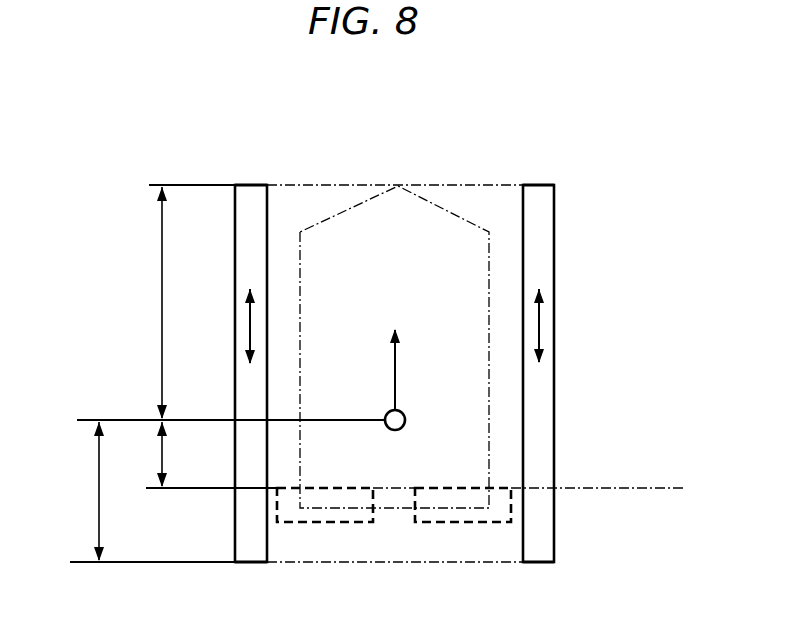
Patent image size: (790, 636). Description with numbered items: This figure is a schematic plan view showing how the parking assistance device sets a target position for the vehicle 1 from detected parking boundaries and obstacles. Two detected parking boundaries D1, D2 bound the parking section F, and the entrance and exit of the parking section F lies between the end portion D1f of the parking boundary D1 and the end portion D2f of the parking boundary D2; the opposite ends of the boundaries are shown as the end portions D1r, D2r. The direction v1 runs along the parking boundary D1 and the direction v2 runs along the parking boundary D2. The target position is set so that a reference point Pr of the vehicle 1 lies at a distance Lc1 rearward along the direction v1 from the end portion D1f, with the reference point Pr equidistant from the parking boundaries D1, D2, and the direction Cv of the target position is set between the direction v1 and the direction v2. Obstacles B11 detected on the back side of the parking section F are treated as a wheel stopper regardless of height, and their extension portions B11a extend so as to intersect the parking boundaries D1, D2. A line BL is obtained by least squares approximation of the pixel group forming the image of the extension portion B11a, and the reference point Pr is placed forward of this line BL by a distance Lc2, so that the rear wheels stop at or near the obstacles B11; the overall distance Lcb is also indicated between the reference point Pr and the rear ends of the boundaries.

The vehicle 1 is at (408, 185).
The parking boundary D1 is at (272, 221).
The end portion of the parking boundary D1 D1f is at (254, 183).
The rear end of first die D1r is at (251, 564).
The parking boundary D2 is at (519, 222).
The end portion of the parking boundary D2 D2f is at (543, 183).
The rear end of second die D2r is at (539, 564).
The parking section F is at (315, 204).
The distance Lc1 is at (139, 302).
The distance Lc2 is at (139, 454).
The length to bottom Lcb is at (78, 491).
The direction v1 is at (248, 324).
The direction v2 is at (541, 322).
The direction of the target position Cv is at (396, 372).
The reference point Pr is at (405, 418).
The line BL is at (629, 487).
The extension portion B11a is at (330, 491).
The obstacle B11 is at (394, 557).